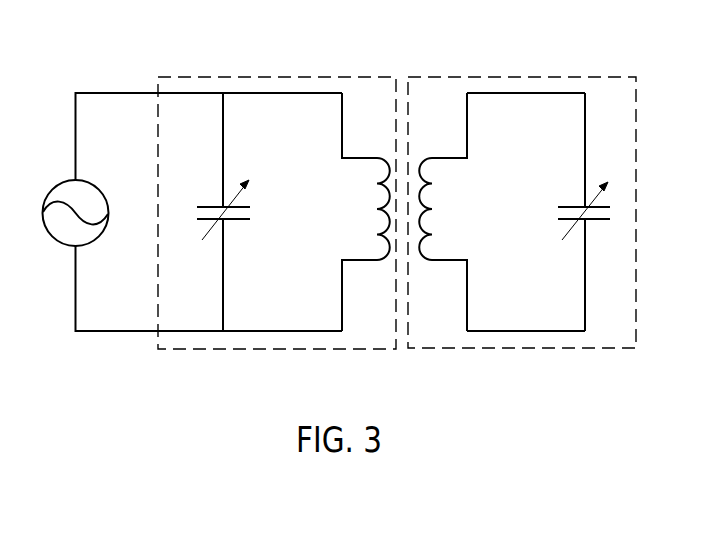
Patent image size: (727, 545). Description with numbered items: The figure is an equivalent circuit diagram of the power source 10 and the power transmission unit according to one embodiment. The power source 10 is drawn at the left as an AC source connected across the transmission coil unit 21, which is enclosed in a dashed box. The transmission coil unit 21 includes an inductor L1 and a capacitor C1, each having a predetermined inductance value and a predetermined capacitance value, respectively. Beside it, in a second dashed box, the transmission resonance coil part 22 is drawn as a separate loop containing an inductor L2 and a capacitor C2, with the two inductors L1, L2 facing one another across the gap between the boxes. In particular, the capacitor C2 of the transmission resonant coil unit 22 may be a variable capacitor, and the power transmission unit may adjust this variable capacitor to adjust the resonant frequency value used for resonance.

The power source 10 is at (52, 184).
The transmission coil unit 21 is at (310, 77).
The transmission resonance coil part 22 is at (465, 77).
The capacitor C1 is at (209, 212).
The inductor L1 is at (365, 212).
The inductor L2 is at (444, 212).
The capacitor C2 is at (591, 212).